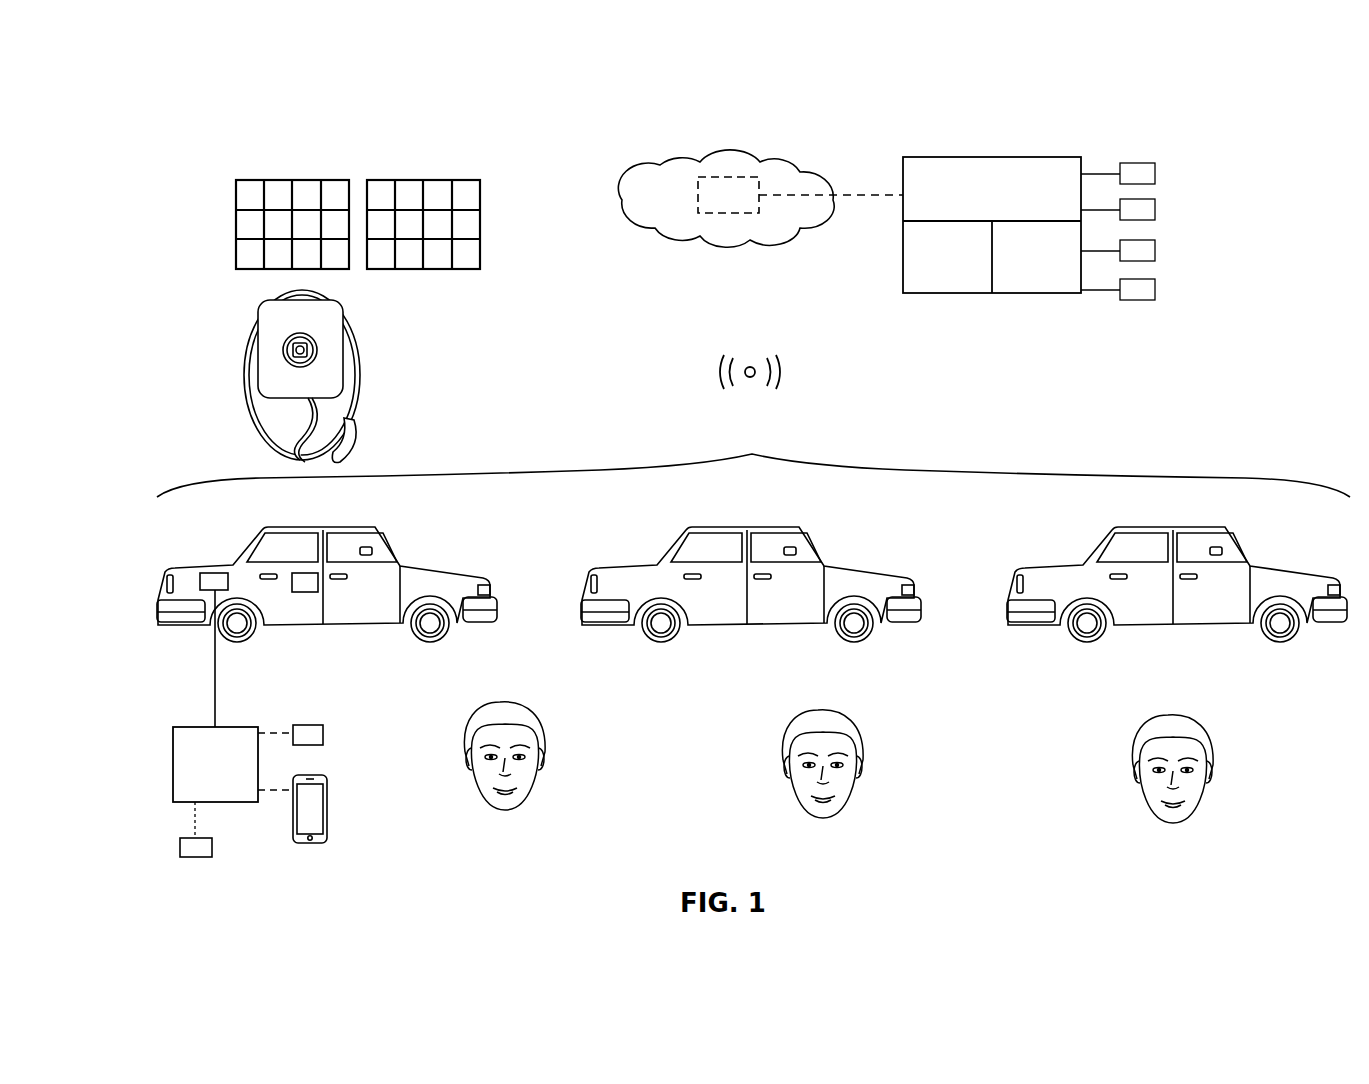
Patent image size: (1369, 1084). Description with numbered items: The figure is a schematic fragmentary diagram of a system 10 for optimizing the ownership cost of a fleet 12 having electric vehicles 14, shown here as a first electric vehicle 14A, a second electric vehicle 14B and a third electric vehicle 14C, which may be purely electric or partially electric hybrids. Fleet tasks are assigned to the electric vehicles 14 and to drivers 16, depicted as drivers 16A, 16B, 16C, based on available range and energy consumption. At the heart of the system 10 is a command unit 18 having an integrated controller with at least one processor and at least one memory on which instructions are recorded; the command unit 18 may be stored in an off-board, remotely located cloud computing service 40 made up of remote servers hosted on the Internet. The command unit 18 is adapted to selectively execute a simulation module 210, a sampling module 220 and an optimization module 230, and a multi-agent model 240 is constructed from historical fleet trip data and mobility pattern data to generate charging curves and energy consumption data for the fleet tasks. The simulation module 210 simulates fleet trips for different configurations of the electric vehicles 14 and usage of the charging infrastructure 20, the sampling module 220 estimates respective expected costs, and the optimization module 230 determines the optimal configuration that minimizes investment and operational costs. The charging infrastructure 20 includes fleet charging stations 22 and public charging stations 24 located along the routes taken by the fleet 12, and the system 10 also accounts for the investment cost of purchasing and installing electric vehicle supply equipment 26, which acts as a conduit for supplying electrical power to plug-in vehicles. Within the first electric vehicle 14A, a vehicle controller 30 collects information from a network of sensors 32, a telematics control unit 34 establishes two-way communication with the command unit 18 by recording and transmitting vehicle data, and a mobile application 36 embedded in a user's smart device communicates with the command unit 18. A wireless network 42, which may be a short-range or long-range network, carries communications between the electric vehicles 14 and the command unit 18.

The system 10 is at (921, 118).
The fleet 12 is at (1056, 412).
The electric vehicles 14 is at (418, 530).
The first electric vehicle 14A is at (192, 536).
The second electric vehicle 14B is at (841, 531).
The third electric vehicle 14C is at (1268, 533).
The drivers 16 is at (570, 725).
The driver 16A is at (461, 702).
The driver 16B is at (782, 705).
The driver 16C is at (1129, 710).
The command unit 18 is at (735, 177).
The charging infrastructure 20 is at (346, 124).
The fleet charging stations 22 is at (292, 172).
The public charging stations 24 is at (457, 172).
The electric vehicle supply equipment 26 is at (380, 378).
The vehicle controller 30 is at (250, 727).
The sensors 32 is at (195, 857).
The telematics control unit 34 is at (323, 737).
The mobile application 36 is at (327, 810).
The cloud computing service 40 is at (643, 140).
The wireless network 42 is at (776, 353).
The simulation module 210 is at (1155, 175).
The sampling module 220 is at (1155, 210).
The optimization module 230 is at (1155, 251).
The multi-agent model 240 is at (1155, 290).